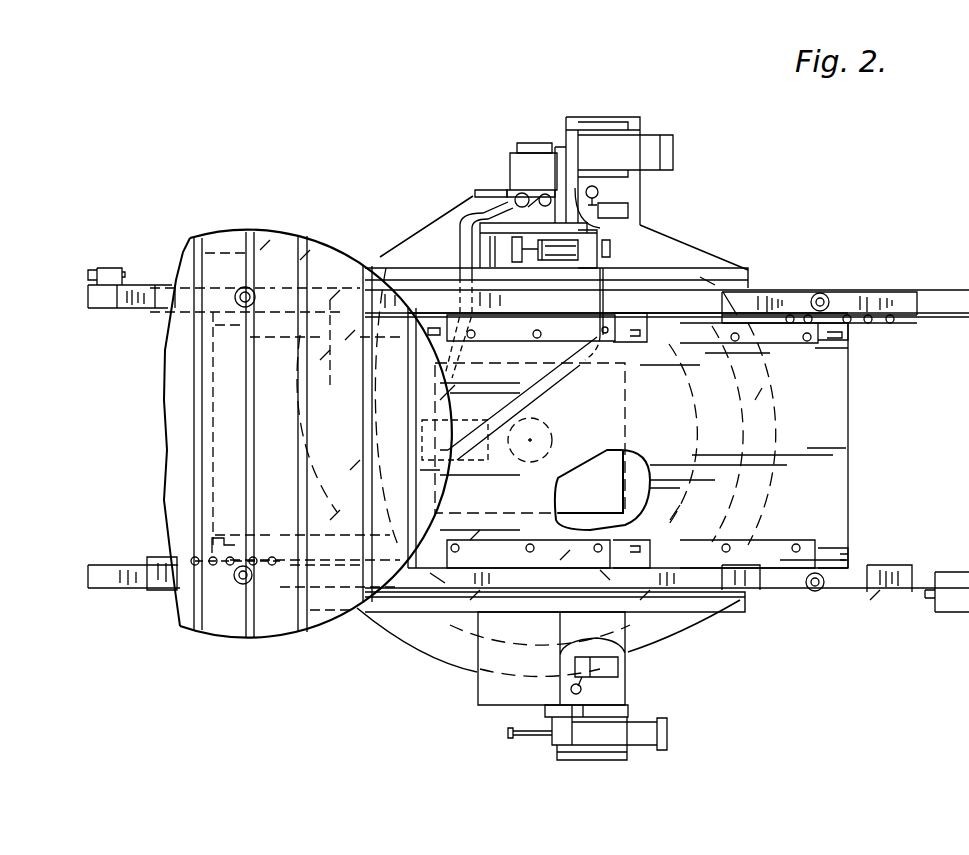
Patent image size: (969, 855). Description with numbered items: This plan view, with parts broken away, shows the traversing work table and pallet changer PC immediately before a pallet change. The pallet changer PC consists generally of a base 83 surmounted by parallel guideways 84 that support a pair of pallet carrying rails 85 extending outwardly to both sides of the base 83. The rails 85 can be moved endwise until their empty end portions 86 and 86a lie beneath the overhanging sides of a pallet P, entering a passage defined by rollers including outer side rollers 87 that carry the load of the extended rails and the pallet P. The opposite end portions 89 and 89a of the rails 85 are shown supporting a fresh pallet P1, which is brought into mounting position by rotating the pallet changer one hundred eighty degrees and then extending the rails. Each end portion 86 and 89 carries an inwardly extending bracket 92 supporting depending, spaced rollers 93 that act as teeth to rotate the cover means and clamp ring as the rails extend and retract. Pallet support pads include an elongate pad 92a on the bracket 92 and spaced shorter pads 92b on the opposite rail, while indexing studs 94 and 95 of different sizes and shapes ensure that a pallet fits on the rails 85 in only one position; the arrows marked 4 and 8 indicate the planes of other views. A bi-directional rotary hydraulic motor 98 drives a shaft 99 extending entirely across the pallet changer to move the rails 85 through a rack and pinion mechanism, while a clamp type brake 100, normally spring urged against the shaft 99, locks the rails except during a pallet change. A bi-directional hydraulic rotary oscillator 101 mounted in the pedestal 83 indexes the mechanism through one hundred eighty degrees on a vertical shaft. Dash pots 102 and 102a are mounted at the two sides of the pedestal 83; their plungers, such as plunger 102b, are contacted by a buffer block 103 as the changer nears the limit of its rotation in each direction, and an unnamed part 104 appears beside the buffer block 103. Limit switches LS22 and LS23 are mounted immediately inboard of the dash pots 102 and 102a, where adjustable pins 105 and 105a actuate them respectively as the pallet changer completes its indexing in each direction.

The base 83 is at (438, 215).
The parallel guideways 84 is at (725, 272).
The pallet carrying rails 85 is at (949, 328).
The empty rail end portion 86 is at (930, 290).
The empty rail end portion 86a is at (895, 594).
The outer side rollers 87 is at (968, 556).
The rail end portion 89 is at (105, 590).
The rail end portion 89a is at (155, 285).
The inwardly extending bracket 92 is at (150, 568).
The elongate pad 92a is at (155, 558).
The shorter pads 92b is at (175, 312).
The depending spaced rollers 93 is at (245, 560).
The pallet indexing stud 94 is at (243, 288).
The pallet indexing stud 95 is at (820, 292).
The bi-directional rotary hydraulic motor 98 is at (478, 690).
The shaft 99 is at (523, 233).
The clamp type brake 100 is at (570, 255).
The bi-directional hydraulic rotary oscillator 101 is at (620, 504).
The dash pot 102 is at (655, 140).
The dash pot 102a is at (648, 742).
The dash pot plunger 102b is at (525, 738).
The buffer block 103 is at (535, 142).
The valve block 104 is at (512, 170).
The adjustable pin 105 is at (588, 190).
The adjustable pin 105a is at (478, 192).
The limit switch LS22 is at (628, 204).
The limit switch LS23 is at (620, 688).
The pallet P is at (958, 498).
The fresh pallet P1 is at (287, 250).
The pallet changer PC is at (708, 181).
The section line 4 is at (215, 226).
The section line 8 is at (968, 440).